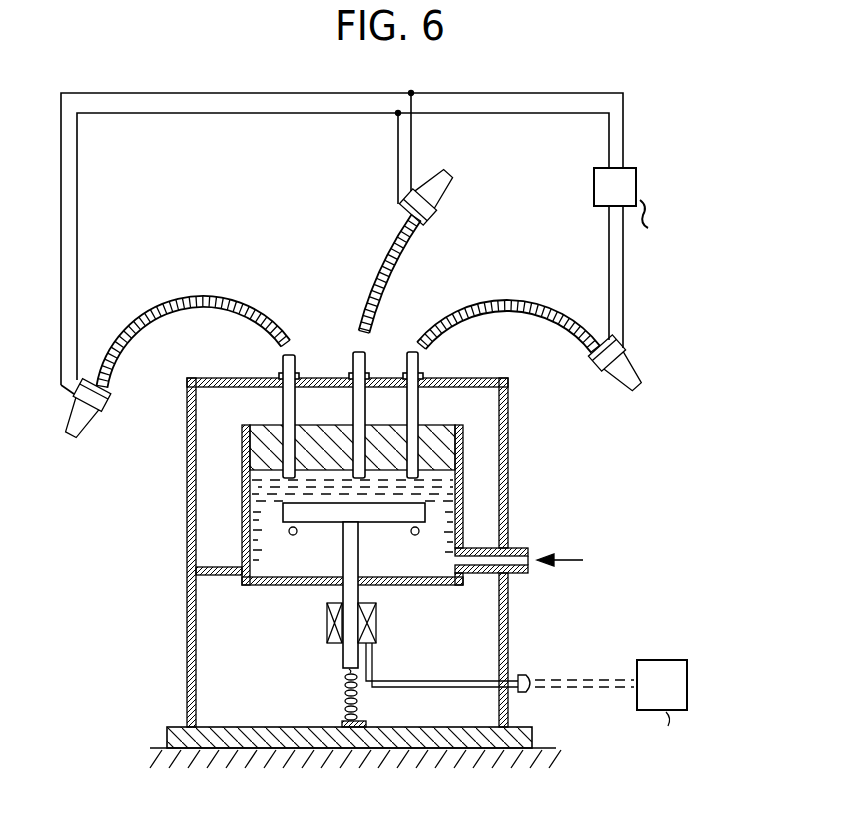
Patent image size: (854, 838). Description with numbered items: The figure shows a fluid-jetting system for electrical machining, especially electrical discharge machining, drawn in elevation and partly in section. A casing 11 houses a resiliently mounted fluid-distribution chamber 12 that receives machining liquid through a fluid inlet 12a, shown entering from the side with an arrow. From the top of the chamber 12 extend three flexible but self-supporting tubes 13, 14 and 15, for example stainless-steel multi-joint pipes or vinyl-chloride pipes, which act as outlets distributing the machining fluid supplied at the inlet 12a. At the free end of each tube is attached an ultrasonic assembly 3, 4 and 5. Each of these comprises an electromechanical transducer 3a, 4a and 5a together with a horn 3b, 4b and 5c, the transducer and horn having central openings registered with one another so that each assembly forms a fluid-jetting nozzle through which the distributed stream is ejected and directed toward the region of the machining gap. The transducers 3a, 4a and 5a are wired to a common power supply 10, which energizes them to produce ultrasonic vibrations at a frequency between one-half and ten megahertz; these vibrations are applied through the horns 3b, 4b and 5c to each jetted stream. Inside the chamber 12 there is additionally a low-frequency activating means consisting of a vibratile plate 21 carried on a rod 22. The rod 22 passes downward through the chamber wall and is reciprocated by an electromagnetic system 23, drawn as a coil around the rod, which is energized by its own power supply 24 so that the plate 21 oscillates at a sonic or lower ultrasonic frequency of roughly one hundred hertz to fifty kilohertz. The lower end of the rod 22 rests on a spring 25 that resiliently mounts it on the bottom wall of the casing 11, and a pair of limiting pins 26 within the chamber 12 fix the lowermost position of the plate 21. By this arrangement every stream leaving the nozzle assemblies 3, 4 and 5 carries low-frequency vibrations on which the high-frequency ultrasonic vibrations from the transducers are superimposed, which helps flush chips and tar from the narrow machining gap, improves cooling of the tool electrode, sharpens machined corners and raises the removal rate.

The ultrasonic assembly 3 is at (99, 397).
The electromechanical transducer 3a is at (89, 356).
The horn 3b is at (102, 440).
The ultrasonic assembly 4 is at (422, 182).
The electromechanical transducer 4a is at (389, 184).
The horn 4b is at (467, 189).
The ultrasonic assembly 5 is at (245, 512).
The electromechanical transducer 5a is at (630, 340).
The nozzle horn of unit 5 5c is at (616, 406).
The power supply 10 is at (629, 190).
The casing 11 is at (510, 462).
The fluid-distribution chamber 12 is at (452, 503).
The fluid inlet 12a is at (520, 546).
The flexible tube 13 is at (233, 297).
The flexible tube 14 is at (364, 274).
The flexible tube 15 is at (478, 298).
The vibratile plate 21 is at (325, 515).
The rod 22 is at (360, 592).
The electromagnetic system 23 is at (377, 630).
The power supply 24 is at (722, 690).
The spring 25 is at (358, 705).
The limiting pins 26 is at (414, 535).